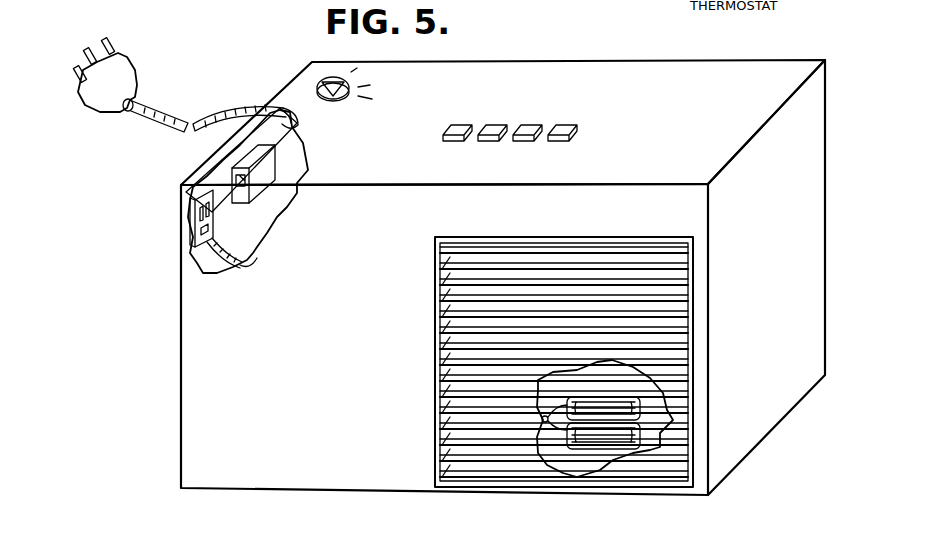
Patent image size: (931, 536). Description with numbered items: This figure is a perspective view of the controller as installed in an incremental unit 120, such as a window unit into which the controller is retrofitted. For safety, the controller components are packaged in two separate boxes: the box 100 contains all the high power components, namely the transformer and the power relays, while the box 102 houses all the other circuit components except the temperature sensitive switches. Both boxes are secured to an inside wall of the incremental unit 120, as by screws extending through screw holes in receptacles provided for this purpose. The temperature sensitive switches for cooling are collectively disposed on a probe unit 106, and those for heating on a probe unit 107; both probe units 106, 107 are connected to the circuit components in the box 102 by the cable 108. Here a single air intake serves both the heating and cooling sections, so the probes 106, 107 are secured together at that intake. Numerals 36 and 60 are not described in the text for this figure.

The receptacle 36 is at (197, 240).
The control module 60 is at (228, 186).
The box 100 is at (226, 140).
The box 102 is at (180, 233).
The probe unit 106 is at (640, 410).
The probe unit 107 is at (637, 433).
The cable 108 is at (257, 258).
The incremental unit 120 is at (503, 277).